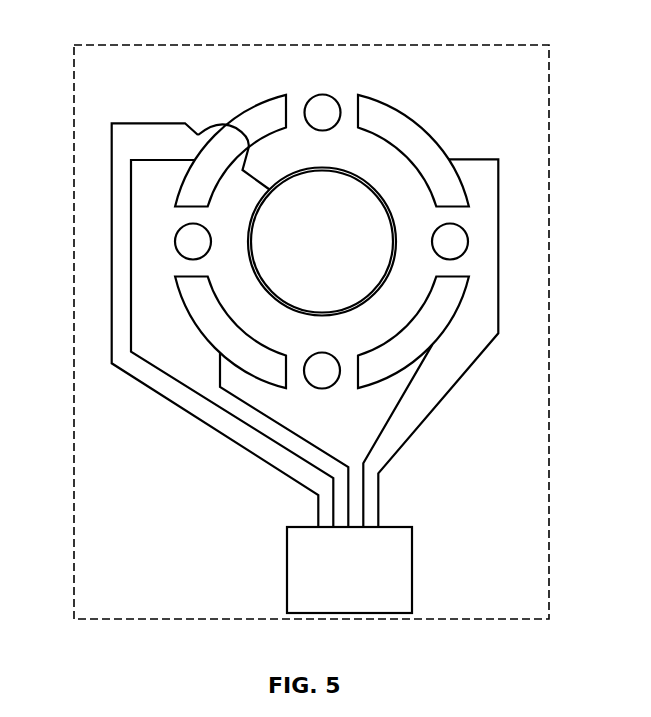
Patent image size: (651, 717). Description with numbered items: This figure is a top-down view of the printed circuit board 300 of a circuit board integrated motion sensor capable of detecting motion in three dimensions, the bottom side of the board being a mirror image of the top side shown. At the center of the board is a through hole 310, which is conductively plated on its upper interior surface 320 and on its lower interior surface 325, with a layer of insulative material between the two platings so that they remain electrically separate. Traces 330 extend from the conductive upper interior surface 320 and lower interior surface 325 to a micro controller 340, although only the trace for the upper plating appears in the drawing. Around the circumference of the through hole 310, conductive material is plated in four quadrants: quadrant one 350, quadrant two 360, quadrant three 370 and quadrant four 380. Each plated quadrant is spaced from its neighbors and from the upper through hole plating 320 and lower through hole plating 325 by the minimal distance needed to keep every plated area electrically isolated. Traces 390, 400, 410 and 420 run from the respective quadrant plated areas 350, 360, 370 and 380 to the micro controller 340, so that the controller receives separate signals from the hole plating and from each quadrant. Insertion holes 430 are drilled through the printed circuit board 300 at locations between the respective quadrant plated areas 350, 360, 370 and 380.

The printed circuit board 300 is at (480, 45).
The through hole 310 is at (344, 208).
The upper interior surface 320 is at (279, 300).
The lower interior surface 325 is at (385, 264).
The traces 330 is at (260, 170).
The micro controller 340 is at (412, 566).
The quadrant one 350 is at (410, 117).
The quadrant two 360 is at (447, 332).
The quadrant three 370 is at (200, 332).
The quadrant four 380 is at (258, 103).
The trace 390 is at (380, 480).
The trace 400 is at (363, 507).
The trace 410 is at (348, 510).
The trace 420 is at (333, 517).
The insertion holes 430 is at (322, 95).